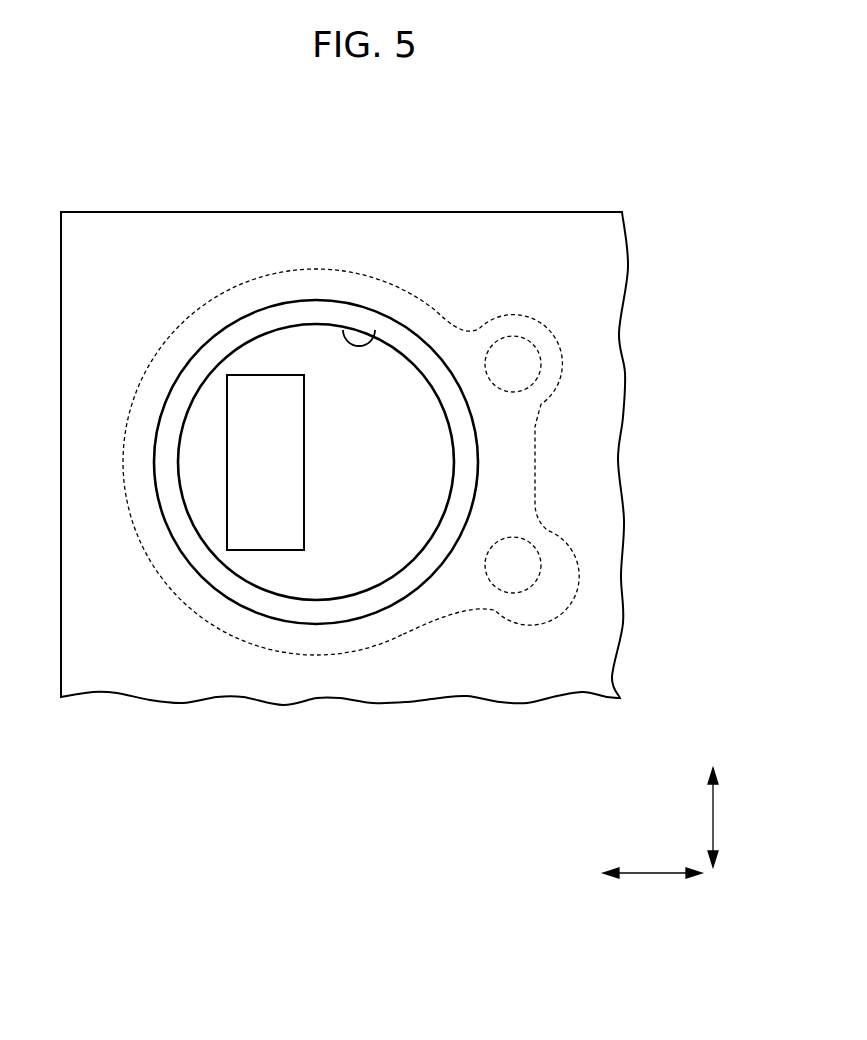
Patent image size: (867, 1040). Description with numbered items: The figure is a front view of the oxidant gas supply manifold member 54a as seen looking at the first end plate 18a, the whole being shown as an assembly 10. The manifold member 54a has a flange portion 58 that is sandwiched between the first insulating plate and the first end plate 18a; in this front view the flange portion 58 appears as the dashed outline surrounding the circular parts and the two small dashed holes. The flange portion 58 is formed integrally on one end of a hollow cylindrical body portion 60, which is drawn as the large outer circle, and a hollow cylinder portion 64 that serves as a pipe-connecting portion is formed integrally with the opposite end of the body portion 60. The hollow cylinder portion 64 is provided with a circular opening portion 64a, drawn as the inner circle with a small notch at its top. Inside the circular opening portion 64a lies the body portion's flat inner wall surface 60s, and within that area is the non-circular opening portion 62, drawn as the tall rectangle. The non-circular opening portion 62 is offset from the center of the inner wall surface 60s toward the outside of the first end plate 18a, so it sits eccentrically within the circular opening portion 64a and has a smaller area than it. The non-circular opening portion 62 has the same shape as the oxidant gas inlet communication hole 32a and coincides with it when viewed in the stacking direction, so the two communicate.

The drive unit 10 is at (449, 96).
The first end plate 18a is at (568, 201).
The body portion 60 is at (398, 618).
The inner wall surface 60s is at (277, 343).
The hollow cylinder portion 64 is at (316, 415).
The circular opening portion 64a is at (345, 335).
The oxidant gas inlet communication hole 32a is at (278, 476).
The non-circular opening portion 62 is at (283, 549).
The oxidant gas supply manifold member 54a is at (500, 446).
The flange portion 58 is at (545, 540).